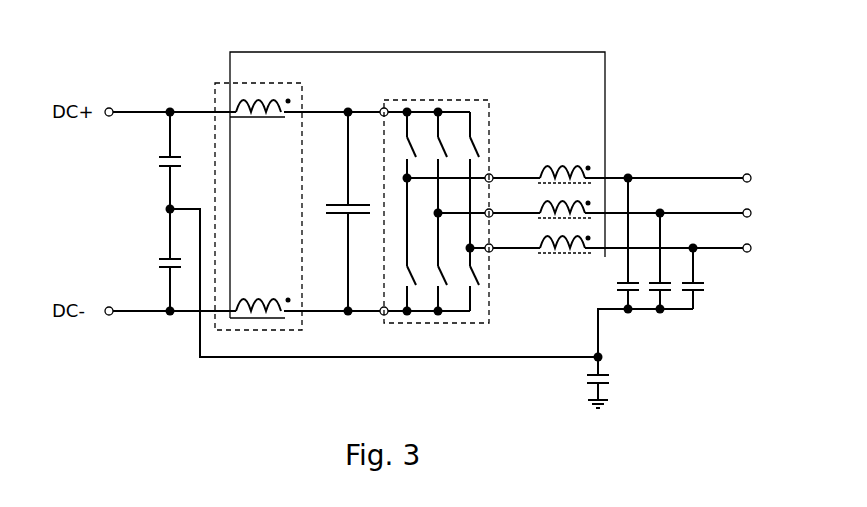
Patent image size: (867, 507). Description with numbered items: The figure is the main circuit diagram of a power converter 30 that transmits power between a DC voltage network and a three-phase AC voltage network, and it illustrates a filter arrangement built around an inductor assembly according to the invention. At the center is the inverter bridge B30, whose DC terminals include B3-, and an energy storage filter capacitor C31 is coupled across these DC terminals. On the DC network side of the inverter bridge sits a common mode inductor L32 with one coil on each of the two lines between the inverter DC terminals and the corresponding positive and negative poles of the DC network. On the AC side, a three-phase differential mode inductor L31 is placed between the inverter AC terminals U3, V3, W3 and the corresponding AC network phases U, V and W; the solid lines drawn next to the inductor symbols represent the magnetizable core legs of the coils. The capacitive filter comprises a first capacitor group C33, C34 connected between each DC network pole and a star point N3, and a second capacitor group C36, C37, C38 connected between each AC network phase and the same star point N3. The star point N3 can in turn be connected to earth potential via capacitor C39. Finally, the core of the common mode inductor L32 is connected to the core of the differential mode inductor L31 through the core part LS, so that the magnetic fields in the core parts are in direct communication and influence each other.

The power converter 30 is at (710, 102).
The core part LS is at (388, 48).
The common mode inductor L32 is at (258, 195).
The 3-phase differential mode inductor L31 is at (565, 198).
The inverter bridge B30 is at (458, 99).
The DC terminal B3- is at (378, 330).
The energy storage filter capacitor C31 is at (341, 211).
The first capacitor group capacitor C33 is at (154, 160).
The first capacitor group capacitor C34 is at (154, 258).
The second capacitor group capacitor C36 is at (630, 271).
The second capacitor group capacitor C37 is at (672, 288).
The second capacitor group capacitor C38 is at (722, 290).
The capacitor C39 is at (575, 381).
The star point N3 is at (384, 285).
The inverter AC terminal U3 is at (472, 169).
The inverter AC terminal V3 is at (487, 204).
The inverter AC terminal W3 is at (503, 240).